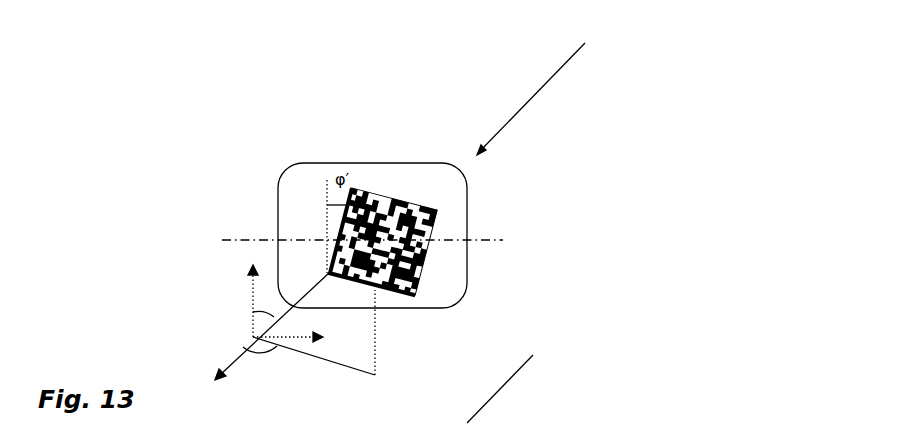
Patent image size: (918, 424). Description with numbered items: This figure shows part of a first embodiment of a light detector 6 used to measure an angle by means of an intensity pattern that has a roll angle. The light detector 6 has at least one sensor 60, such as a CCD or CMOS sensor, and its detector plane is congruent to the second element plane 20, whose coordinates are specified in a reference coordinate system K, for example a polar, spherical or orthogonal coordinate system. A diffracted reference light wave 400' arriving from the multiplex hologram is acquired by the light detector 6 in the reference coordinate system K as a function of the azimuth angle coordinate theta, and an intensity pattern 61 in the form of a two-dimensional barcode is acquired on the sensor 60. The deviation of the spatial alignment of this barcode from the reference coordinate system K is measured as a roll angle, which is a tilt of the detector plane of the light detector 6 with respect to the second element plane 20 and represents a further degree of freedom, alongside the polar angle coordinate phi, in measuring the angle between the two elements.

The light detector 6 is at (318, 235).
The sensor 60 is at (293, 203).
The intensity pattern 61 is at (368, 195).
The second element plane 20 is at (508, 240).
The diffracted reference light wave 400' is at (547, 233).
The reference coordinate system K is at (241, 331).